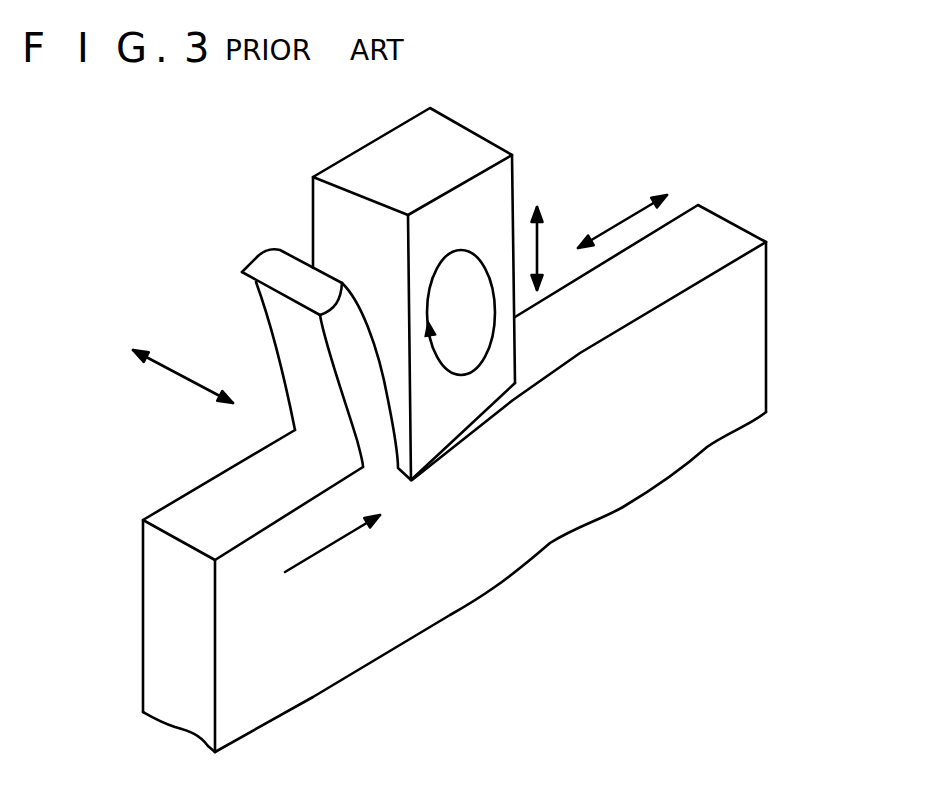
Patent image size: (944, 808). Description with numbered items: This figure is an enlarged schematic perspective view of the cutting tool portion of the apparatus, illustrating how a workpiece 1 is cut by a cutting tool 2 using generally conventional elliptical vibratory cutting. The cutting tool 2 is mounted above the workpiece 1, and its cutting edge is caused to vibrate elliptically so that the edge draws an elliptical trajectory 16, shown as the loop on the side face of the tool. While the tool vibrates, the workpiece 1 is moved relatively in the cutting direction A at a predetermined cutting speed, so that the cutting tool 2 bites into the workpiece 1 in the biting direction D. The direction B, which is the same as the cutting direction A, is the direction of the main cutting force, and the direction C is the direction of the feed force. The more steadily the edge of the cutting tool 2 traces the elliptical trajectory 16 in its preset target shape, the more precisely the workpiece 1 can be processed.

The workpiece 1 is at (737, 343).
The cutting tool 2 is at (493, 198).
The elliptical trajectory 16 is at (448, 377).
The cutting direction A is at (327, 548).
The direction of main cutting force B is at (618, 223).
The direction of feed force C is at (182, 380).
The biting direction D is at (538, 248).